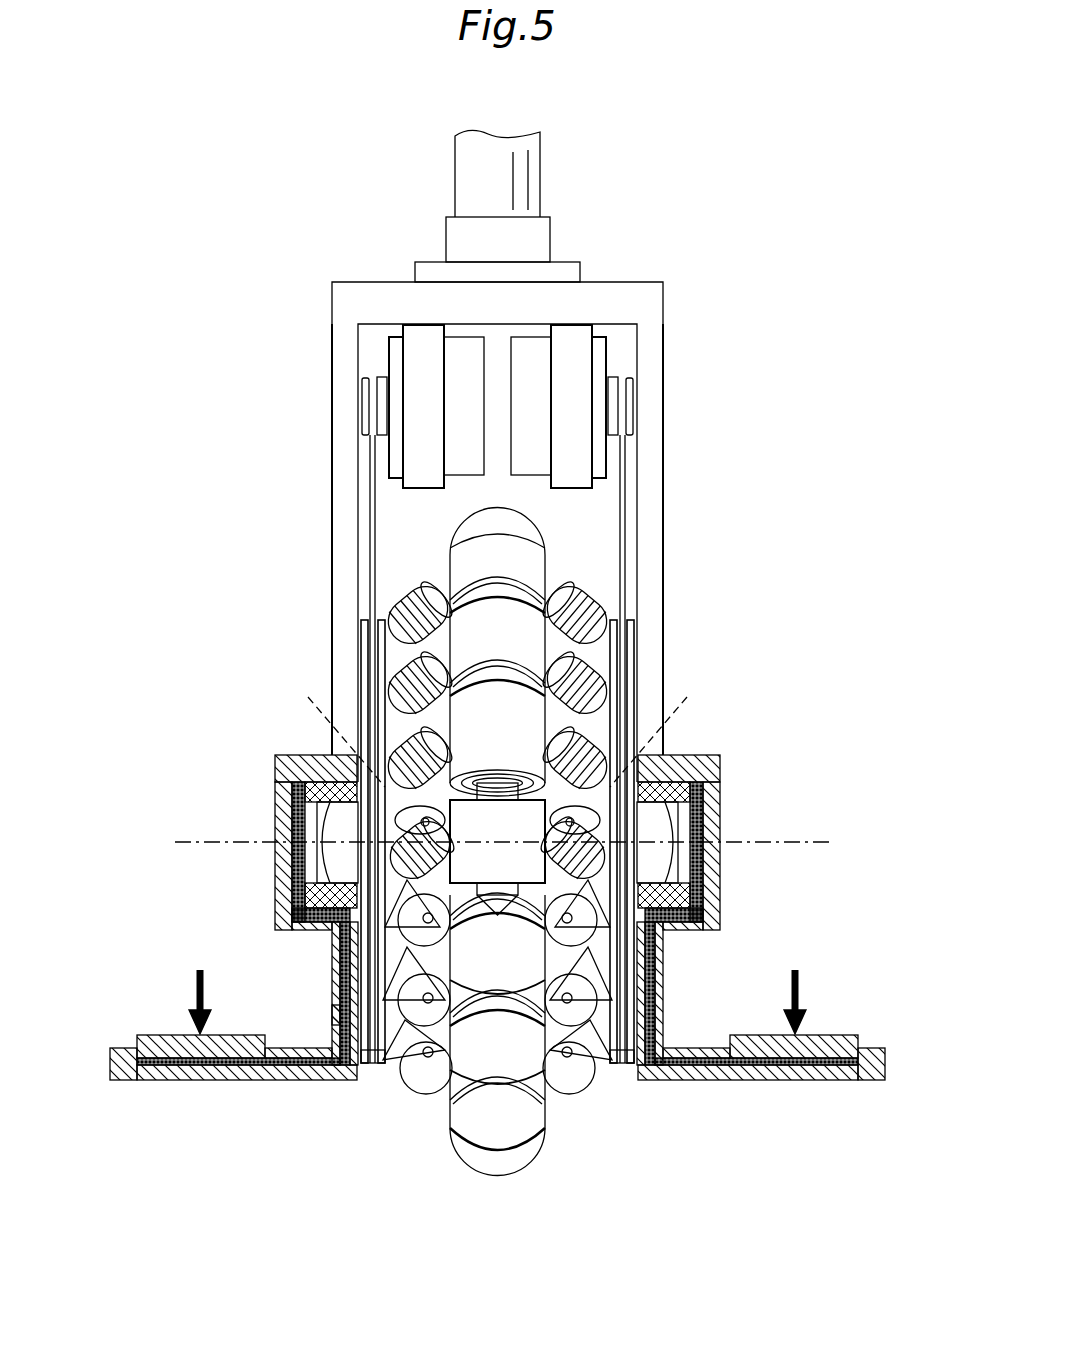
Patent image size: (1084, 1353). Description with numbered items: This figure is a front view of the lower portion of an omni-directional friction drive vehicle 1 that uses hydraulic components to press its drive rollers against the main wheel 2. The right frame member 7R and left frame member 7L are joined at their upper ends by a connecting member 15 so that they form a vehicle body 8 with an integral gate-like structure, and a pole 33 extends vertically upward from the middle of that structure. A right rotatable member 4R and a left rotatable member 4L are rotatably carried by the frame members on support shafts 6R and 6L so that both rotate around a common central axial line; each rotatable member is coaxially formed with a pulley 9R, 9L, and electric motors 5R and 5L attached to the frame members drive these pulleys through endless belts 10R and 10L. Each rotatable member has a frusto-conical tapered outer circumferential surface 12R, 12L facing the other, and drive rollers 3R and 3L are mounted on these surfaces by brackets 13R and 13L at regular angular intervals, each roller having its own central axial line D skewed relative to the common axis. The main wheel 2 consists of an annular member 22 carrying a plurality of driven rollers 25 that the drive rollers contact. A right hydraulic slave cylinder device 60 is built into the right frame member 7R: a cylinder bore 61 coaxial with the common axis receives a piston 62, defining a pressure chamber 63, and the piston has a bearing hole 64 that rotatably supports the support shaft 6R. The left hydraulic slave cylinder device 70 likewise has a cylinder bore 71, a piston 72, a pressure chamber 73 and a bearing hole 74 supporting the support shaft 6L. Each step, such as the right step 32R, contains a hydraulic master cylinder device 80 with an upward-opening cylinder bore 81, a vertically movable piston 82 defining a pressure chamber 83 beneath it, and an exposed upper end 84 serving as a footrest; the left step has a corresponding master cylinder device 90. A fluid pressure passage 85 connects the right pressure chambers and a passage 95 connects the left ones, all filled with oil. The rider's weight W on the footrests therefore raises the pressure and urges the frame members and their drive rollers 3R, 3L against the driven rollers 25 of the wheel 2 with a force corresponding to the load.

The omni-directional vehicle 1 is at (703, 424).
The main wheel 2 is at (550, 1165).
The right drive rollers 3R is at (412, 602).
The left drive rollers 3L is at (583, 600).
The right rotatable member 4R is at (392, 945).
The left rotatable member 4L is at (605, 945).
The right electric motor 5R is at (456, 372).
The left electric motor 5L is at (538, 376).
The right support shaft 6R is at (340, 862).
The left support shaft 6L is at (655, 862).
The right frame member 7R is at (343, 540).
The left frame member 7L is at (650, 549).
The vehicle body 8 is at (637, 272).
The right pulley 9R is at (373, 657).
The left pulley 9L is at (622, 662).
The right endless belt 10R is at (376, 500).
The left endless belt 10L is at (622, 507).
The right frusto-conical tapered outer circumferential surface 12R is at (278, 765).
The left frusto-conical tapered outer circumferential surface 12L is at (717, 765).
The right bracket 13R is at (392, 1078).
The left bracket 13L is at (640, 1042).
The connecting member 15 is at (356, 290).
The annular member 22 is at (345, 1012).
The driven rollers 25 is at (445, 985).
The right step 32R is at (182, 1082).
The pole 33 is at (538, 172).
The right hydraulic slave cylinder device 60 is at (270, 866).
The right cylinder bore 61 is at (332, 793).
The right piston 62 is at (330, 904).
The right pressure chamber 63 is at (330, 804).
The right bearing hole 64 is at (330, 935).
The left hydraulic slave cylinder device 70 is at (727, 863).
The left cylinder bore 71 is at (660, 790).
The left piston 72 is at (670, 904).
The left pressure chamber 73 is at (665, 805).
The left bearing hole 74 is at (668, 935).
The right hydraulic master cylinder device 80 is at (220, 1063).
The right master cylinder bore 81 is at (258, 1072).
The right master piston 82 is at (135, 1078).
The right master pressure chamber 83 is at (225, 1080).
The upper end of right master piston 84 is at (165, 1035).
The right fluid pressure passage 85 is at (345, 990).
The left hydraulic master cylinder device 90 is at (777, 1061).
The left fluid pressure passage 95 is at (655, 1005).
The weight of the rider W is at (498, 991).
The central axial line of drive roller D is at (498, 728).